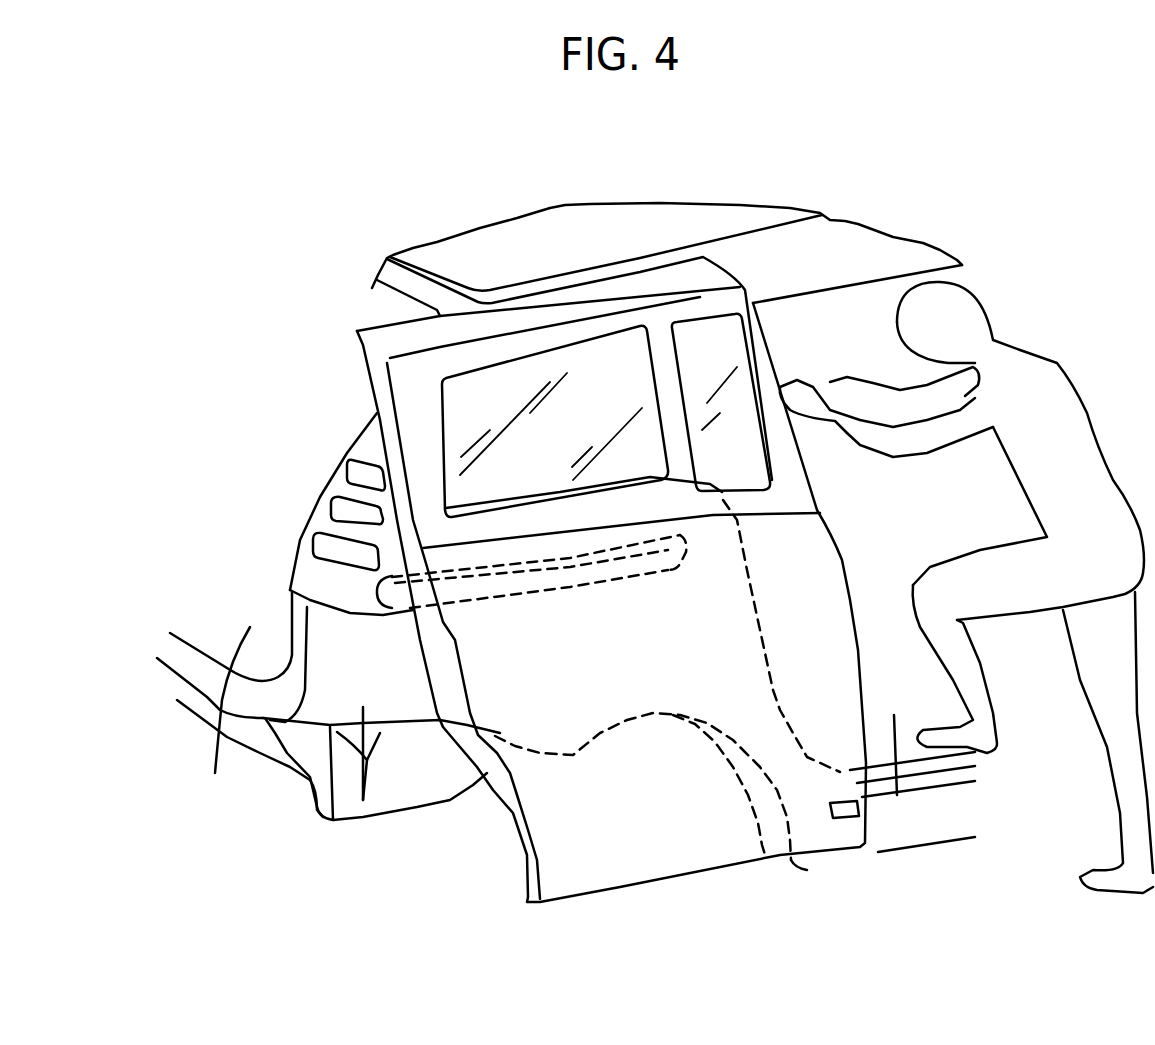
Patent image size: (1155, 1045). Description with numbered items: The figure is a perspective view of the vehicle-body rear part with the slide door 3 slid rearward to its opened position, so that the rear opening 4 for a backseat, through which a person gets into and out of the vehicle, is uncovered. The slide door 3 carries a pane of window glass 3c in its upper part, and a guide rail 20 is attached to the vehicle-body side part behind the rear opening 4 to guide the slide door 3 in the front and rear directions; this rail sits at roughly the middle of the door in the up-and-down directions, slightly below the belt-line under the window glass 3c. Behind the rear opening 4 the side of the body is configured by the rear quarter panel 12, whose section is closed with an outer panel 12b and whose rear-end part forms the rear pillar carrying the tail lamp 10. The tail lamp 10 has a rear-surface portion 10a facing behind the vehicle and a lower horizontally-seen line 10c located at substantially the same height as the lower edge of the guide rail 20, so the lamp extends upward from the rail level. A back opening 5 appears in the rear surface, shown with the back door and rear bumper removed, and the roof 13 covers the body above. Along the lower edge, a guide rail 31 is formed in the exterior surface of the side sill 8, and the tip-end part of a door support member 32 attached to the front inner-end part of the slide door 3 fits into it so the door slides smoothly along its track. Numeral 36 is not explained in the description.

The roof 13 is at (690, 220).
The window glass 3c is at (720, 370).
The tail lamp 10 is at (291, 564).
The air outlet louvers 36 is at (313, 517).
The rear-surface portion 10a is at (238, 657).
The lower horizontally-seen line 10c is at (385, 627).
The back opening 5 is at (215, 773).
The rear quarter panel 12 is at (381, 792).
The outer panel 12b is at (400, 705).
The slide door 3 is at (598, 855).
The guide rail 20 is at (543, 587).
The door support member 32 is at (848, 818).
The rear opening 4 is at (897, 795).
The side sill 8 is at (908, 833).
The guide rail 31 is at (935, 790).